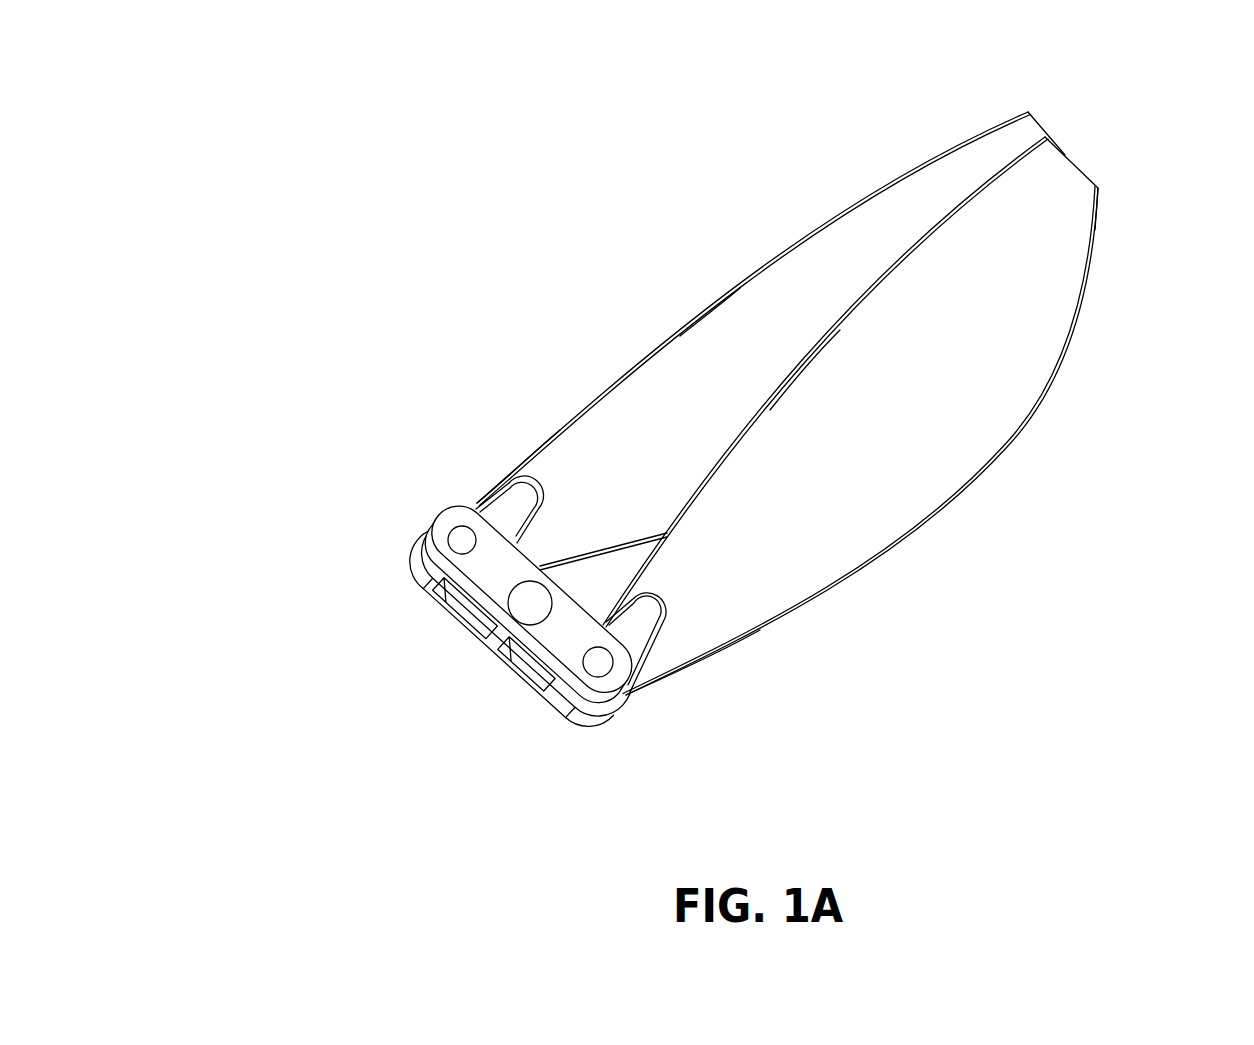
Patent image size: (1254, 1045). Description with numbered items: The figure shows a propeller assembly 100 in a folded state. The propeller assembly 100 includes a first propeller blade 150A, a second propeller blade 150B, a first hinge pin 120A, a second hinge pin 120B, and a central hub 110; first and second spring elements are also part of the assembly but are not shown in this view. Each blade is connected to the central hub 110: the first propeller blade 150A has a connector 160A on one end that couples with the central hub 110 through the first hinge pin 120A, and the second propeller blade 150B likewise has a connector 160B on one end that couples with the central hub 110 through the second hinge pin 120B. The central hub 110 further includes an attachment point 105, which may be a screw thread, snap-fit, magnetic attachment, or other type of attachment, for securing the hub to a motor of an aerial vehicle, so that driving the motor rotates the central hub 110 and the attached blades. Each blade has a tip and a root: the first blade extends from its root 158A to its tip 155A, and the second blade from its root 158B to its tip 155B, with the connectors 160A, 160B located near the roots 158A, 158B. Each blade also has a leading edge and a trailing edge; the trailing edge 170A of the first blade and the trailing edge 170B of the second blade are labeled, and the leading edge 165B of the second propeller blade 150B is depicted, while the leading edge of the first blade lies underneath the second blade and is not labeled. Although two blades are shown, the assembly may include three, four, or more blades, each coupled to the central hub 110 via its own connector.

The propeller assembly 100 is at (147, 72).
The attachment point 105 is at (513, 607).
The central hub 110 is at (485, 645).
The first hinge pin 120A is at (450, 540).
The second hinge pin 120B is at (600, 663).
The first propeller blade 150A is at (800, 332).
The second propeller blade 150B is at (963, 390).
The tip of first propeller blade 155A is at (1005, 137).
The tip of second propeller blade 155B is at (1062, 197).
The root of first propeller blade 158A is at (548, 483).
The root of second propeller blade 158B is at (687, 600).
The connector of first propeller blade 160A is at (477, 503).
The connector of second propeller blade 160B is at (632, 627).
The leading edge of second propeller blade 165B is at (955, 453).
The trailing edge of first propeller blade 170A is at (697, 352).
The trailing edge of second propeller blade 170B is at (807, 387).